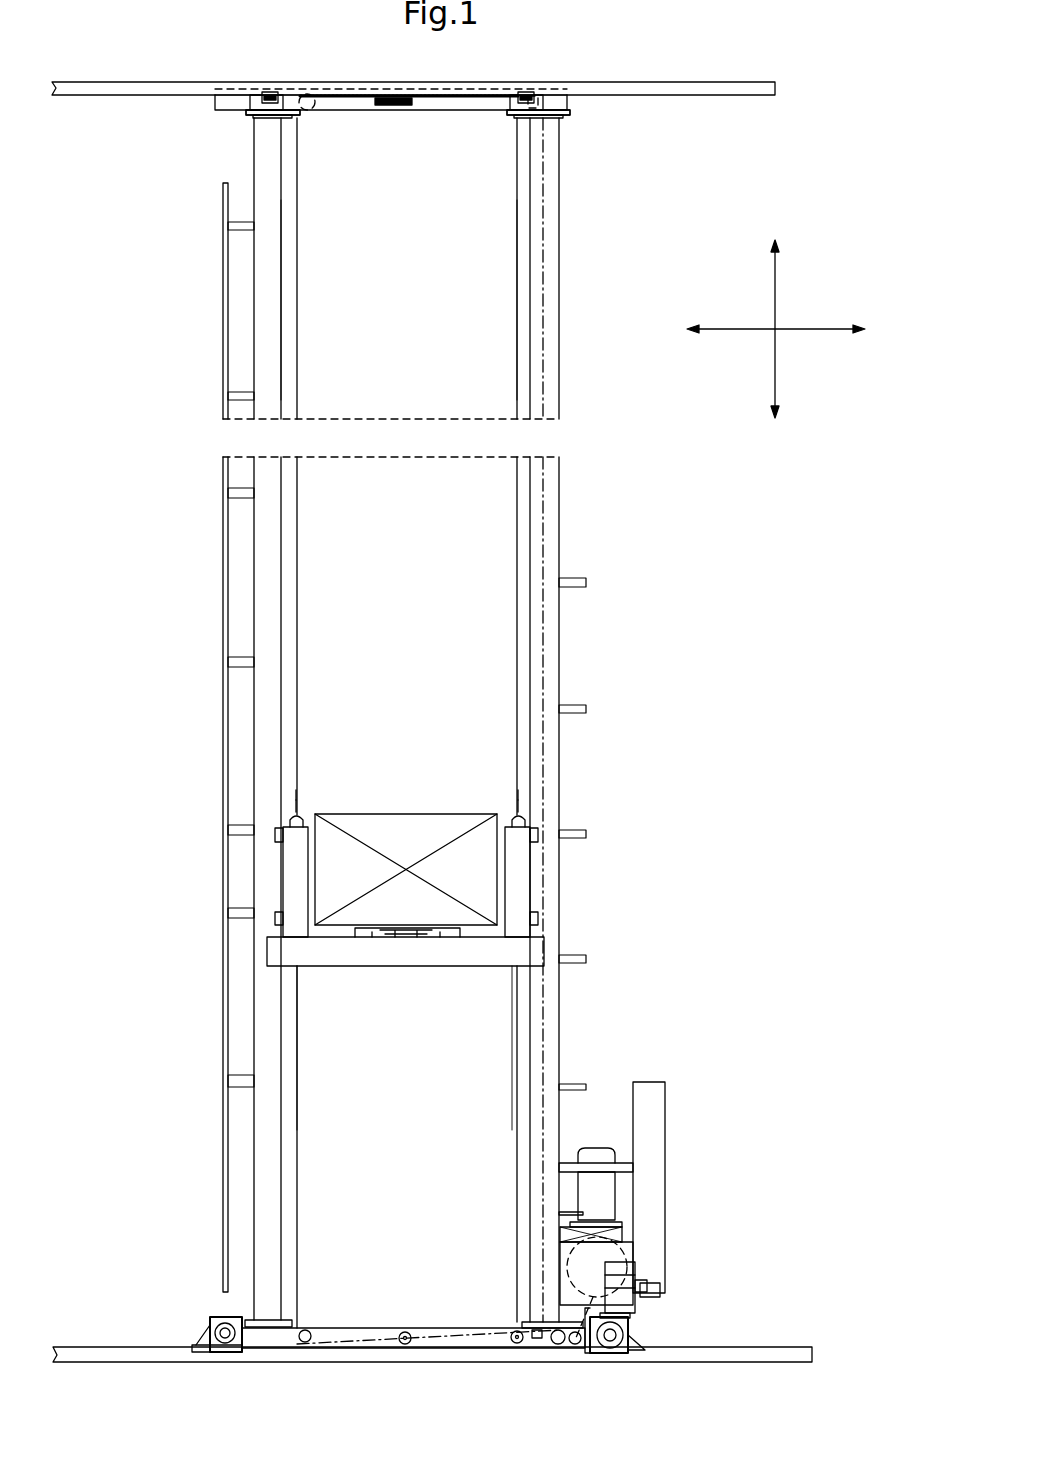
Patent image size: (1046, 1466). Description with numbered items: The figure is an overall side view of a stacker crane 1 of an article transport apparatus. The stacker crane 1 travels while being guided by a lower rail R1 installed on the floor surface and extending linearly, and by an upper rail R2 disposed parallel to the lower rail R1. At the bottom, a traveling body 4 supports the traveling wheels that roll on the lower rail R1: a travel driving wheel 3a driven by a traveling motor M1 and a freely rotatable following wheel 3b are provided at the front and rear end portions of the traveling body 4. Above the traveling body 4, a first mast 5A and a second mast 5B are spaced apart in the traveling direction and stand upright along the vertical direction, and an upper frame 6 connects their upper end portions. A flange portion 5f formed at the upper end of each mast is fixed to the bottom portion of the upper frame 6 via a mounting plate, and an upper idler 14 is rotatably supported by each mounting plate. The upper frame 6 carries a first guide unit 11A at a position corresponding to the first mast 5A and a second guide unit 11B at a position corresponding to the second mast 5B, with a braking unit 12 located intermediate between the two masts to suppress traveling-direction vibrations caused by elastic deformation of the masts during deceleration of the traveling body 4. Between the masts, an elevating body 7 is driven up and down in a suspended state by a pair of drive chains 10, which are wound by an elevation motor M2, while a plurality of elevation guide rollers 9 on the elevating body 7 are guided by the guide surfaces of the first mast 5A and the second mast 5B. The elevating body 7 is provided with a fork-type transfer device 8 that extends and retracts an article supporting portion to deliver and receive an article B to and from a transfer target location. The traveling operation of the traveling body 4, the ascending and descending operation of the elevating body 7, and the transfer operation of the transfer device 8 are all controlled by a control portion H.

The stacker crane 1 is at (704, 226).
The upper rail R2 is at (96, 96).
The lower rail R1 is at (108, 1348).
The second guide unit 11B is at (263, 79).
The first guide unit 11A is at (531, 81).
The flange portion 5f is at (250, 113).
The second mast 5B is at (270, 173).
The first mast 5A is at (552, 346).
The upper idler 14 is at (309, 110).
The braking unit 12 is at (400, 106).
The upper frame 6 is at (375, 112).
The drive chains 10 is at (298, 272).
The article B is at (366, 814).
The elevation guide rollers 9 is at (275, 918).
The transfer device 8 is at (383, 939).
The elevating body 7 is at (425, 968).
The elevation motor M2 is at (597, 1152).
The control portion H is at (655, 1120).
The traveling motor M1 is at (634, 1275).
The following wheel 3b is at (212, 1328).
The travel driving wheel 3a is at (630, 1339).
The traveling body 4 is at (365, 1330).